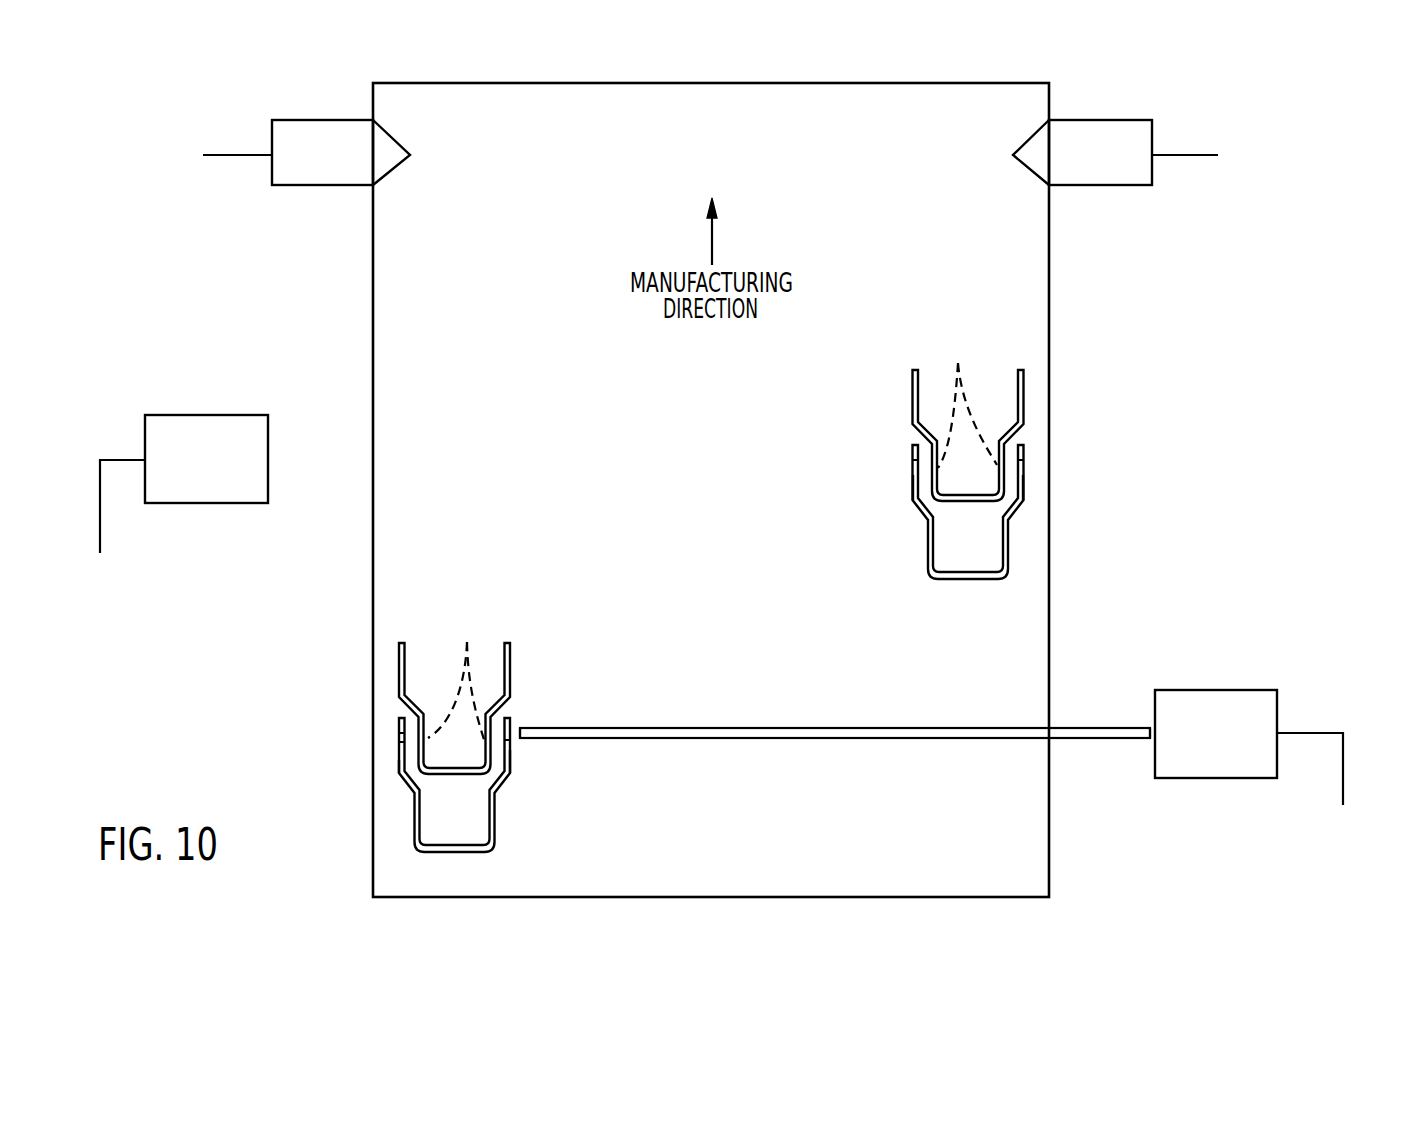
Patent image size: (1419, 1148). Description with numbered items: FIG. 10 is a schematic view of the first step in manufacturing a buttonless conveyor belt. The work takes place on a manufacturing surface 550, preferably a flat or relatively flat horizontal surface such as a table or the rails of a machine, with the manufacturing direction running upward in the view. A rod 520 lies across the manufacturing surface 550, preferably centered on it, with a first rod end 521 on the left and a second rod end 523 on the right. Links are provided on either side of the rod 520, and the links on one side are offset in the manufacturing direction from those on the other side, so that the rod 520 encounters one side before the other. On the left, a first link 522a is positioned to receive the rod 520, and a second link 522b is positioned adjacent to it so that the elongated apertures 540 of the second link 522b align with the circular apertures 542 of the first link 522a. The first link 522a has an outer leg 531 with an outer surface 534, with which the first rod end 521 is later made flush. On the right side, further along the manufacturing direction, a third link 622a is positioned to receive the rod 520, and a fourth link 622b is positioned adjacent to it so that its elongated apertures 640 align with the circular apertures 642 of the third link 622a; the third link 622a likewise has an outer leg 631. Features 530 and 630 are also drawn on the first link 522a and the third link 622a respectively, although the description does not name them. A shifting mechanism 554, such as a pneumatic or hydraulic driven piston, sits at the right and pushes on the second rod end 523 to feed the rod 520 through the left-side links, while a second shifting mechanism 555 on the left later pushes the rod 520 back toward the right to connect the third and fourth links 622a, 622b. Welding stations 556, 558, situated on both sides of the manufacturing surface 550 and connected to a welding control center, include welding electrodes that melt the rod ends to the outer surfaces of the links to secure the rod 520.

The manufacturing surface 550 is at (735, 137).
The welding station 556 is at (308, 168).
The welding station 558 is at (1122, 170).
The second shifting mechanism 555 is at (208, 437).
The shifting mechanism 554 is at (1218, 708).
The rod 520 is at (838, 732).
The first rod end 521 is at (520, 733).
The second rod end 523 is at (1143, 733).
The first link 522a is at (420, 815).
The second link 522b is at (400, 680).
The first side wall 530 is at (513, 762).
The outer leg 531 is at (385, 778).
The outer surface 534 is at (400, 752).
The elongated apertures 540 is at (460, 676).
The circular apertures 542 is at (400, 733).
The third link 622a is at (1005, 542).
The fourth link 622b is at (1022, 405).
The first side wall 630 is at (913, 485).
The outer leg 631 is at (1040, 489).
The elongated apertures 640 is at (964, 401).
The circular apertures 642 is at (912, 460).